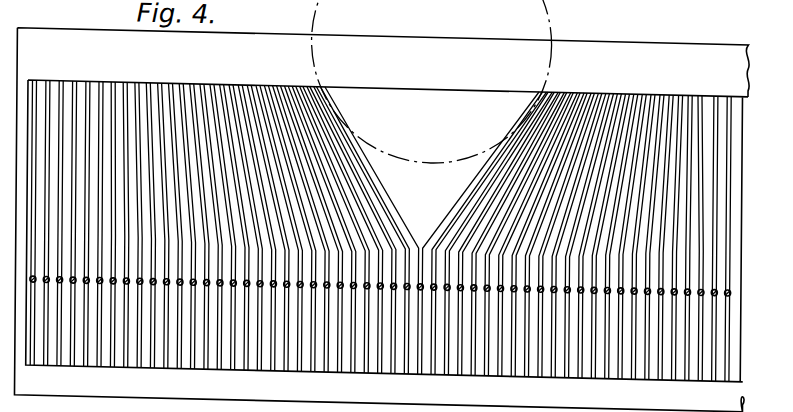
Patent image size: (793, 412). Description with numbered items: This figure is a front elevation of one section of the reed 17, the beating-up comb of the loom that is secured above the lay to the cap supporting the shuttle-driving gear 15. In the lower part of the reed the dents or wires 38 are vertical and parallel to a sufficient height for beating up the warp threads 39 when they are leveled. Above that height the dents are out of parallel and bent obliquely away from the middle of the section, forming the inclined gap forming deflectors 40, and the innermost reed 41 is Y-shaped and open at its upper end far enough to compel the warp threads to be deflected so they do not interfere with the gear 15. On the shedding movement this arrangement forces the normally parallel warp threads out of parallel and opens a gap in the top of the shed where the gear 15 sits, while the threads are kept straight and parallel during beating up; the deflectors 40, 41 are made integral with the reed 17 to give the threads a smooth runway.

The gear 15 is at (312, 16).
The reed 17 is at (90, 26).
The dents or wires 38 is at (528, 349).
The warp threads 39 is at (731, 276).
The inclined gap forming deflectors 40 is at (722, 194).
The innermost reed 41 is at (462, 179).